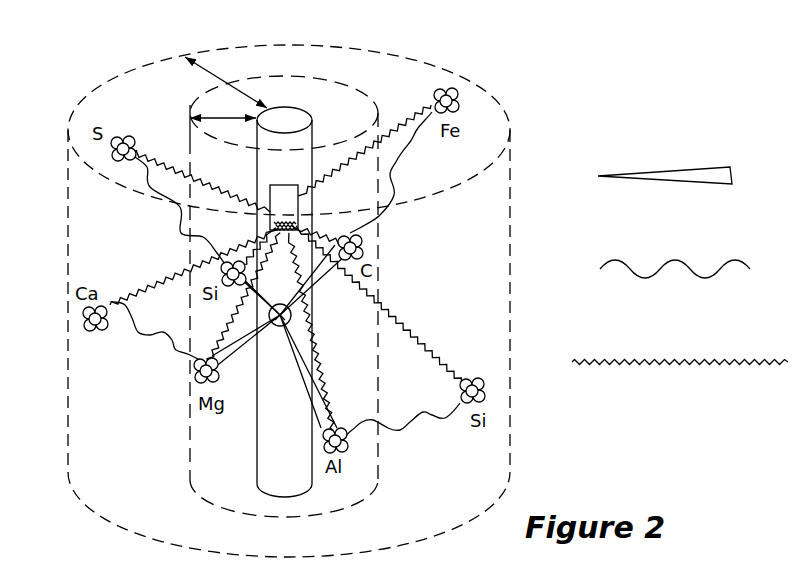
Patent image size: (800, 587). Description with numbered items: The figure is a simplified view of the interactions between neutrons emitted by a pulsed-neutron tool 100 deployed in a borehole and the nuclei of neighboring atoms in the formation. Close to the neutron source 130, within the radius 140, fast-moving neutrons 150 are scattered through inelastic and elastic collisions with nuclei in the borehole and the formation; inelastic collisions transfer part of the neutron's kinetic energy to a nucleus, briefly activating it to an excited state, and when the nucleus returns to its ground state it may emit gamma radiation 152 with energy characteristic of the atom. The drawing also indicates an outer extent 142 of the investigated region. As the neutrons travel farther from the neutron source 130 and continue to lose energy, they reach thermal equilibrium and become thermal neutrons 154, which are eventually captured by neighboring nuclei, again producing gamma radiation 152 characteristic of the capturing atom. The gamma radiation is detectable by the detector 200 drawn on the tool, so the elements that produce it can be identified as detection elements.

The tool 100 is at (309, 92).
The neutron source 130 is at (291, 316).
The radius 140 is at (225, 115).
The outer radius of investigation 142 is at (220, 80).
The fast-moving neutrons 150 is at (683, 194).
The gamma radiation 152 is at (683, 379).
The thermal neutrons 154 is at (676, 283).
The gamma ray detector 200 is at (283, 185).